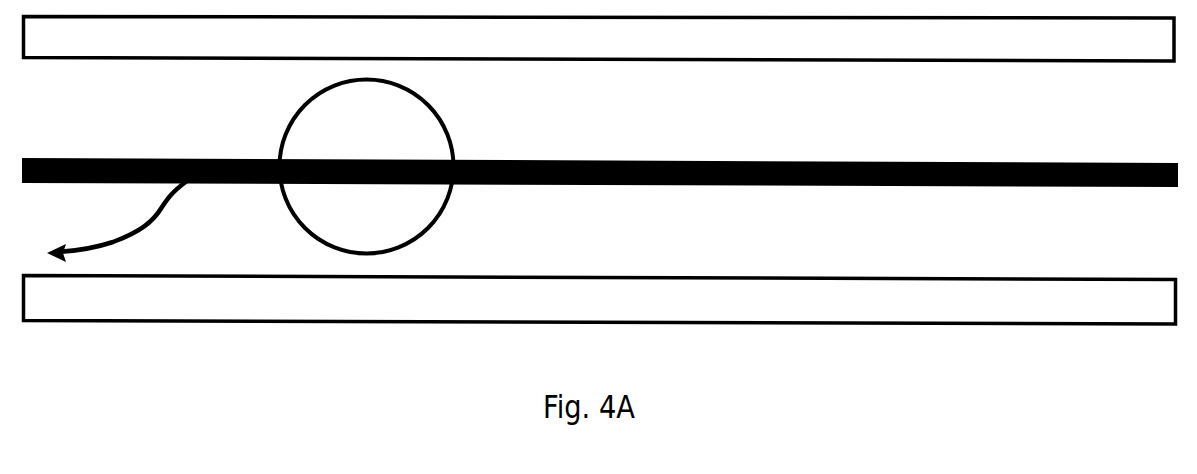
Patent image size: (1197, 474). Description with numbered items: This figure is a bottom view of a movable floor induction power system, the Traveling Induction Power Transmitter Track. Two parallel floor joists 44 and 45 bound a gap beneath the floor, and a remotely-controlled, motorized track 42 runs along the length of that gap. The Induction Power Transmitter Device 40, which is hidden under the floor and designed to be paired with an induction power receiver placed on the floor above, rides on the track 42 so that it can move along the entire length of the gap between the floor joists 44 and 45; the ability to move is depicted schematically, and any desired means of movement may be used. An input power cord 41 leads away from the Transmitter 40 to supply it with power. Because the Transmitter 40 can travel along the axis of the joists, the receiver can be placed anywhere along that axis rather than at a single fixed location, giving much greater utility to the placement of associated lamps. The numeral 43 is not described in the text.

The Induction Power Transmitter Device 40 is at (432, 193).
The input power cord 41 is at (177, 198).
The motorized track 42 is at (743, 185).
The gap region 43 is at (848, 246).
The floor joist 44 is at (778, 301).
The floor joist 45 is at (83, 42).